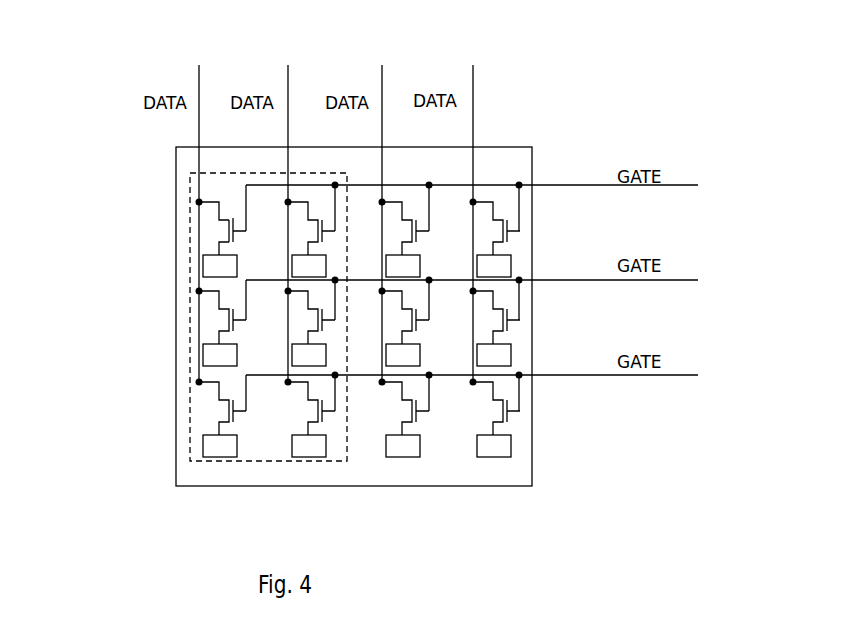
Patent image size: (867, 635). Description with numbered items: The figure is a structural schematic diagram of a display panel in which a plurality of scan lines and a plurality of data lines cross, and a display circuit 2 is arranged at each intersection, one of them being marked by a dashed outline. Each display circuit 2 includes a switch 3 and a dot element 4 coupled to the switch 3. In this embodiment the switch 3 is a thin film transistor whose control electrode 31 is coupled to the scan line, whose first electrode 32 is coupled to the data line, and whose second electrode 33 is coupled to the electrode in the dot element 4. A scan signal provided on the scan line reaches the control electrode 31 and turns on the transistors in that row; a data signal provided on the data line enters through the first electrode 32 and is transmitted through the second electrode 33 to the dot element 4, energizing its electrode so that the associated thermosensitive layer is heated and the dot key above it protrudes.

The display circuit 2 is at (77, 172).
The switch 3 is at (220, 227).
The control electrode 31 is at (233, 232).
The first electrode 32 is at (197, 201).
The second electrode 33 is at (219, 252).
The dot element 4 is at (203, 265).